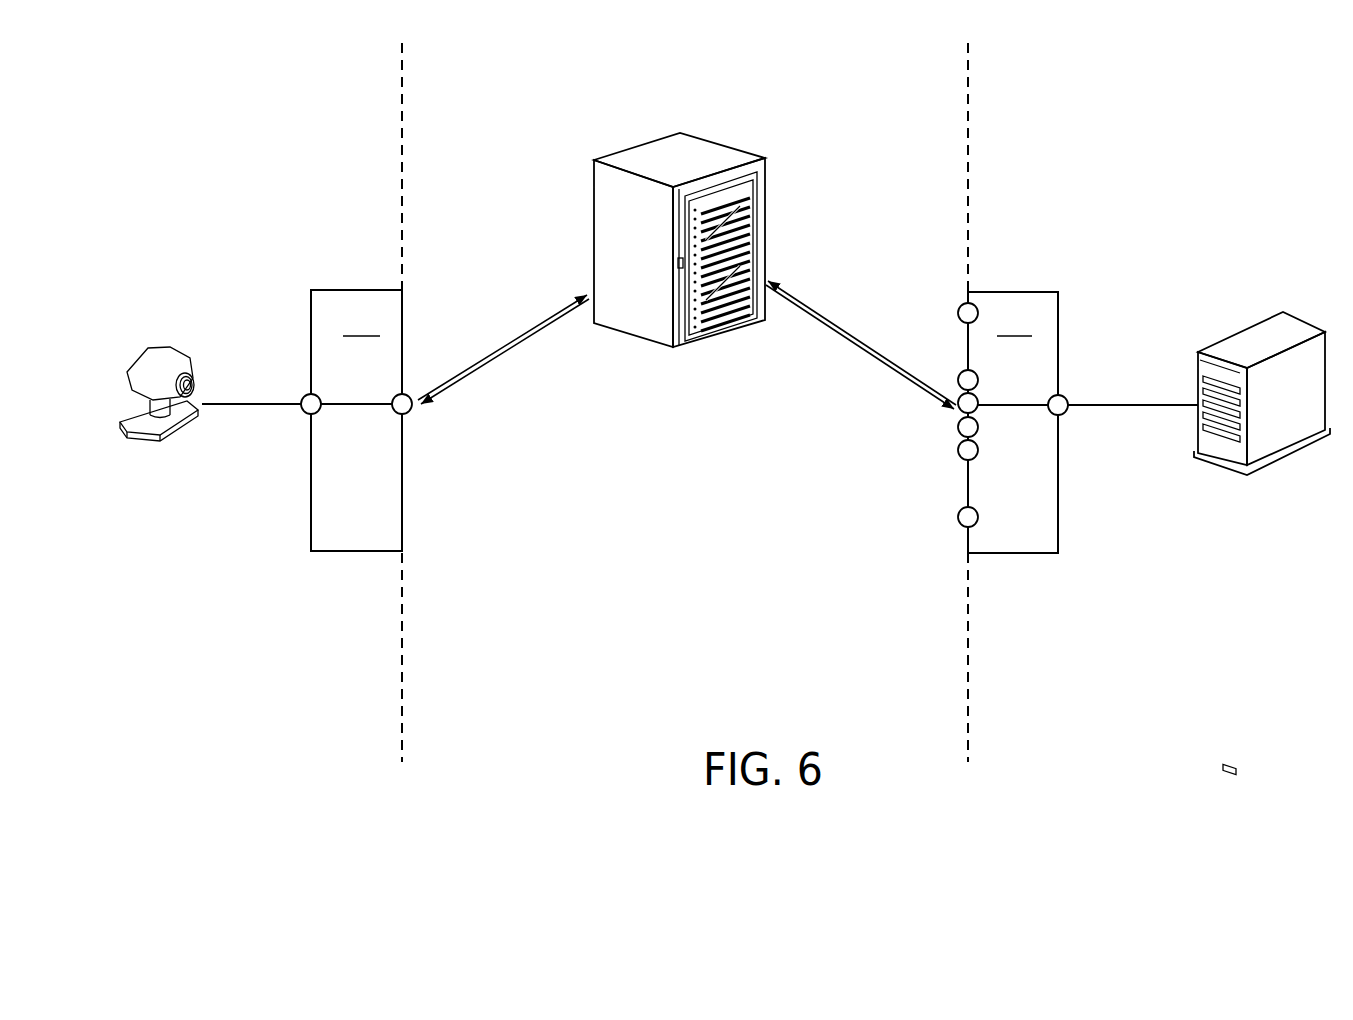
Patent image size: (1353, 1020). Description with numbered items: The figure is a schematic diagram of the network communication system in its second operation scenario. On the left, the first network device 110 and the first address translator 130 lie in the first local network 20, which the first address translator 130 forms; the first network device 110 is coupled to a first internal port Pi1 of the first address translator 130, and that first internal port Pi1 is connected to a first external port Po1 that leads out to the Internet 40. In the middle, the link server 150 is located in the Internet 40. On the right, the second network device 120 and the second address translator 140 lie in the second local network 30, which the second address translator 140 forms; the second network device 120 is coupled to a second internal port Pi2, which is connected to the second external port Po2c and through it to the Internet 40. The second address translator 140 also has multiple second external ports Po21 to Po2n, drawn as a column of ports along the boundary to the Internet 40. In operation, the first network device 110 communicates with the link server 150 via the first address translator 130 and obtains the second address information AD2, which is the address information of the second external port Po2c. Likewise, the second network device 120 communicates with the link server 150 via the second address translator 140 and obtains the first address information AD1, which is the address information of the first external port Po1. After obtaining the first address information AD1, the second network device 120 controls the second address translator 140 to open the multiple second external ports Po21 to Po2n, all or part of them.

The first local network 20 is at (363, 73).
The second local network 30 is at (1300, 73).
The Internet 40 is at (770, 73).
The first network device 110 is at (132, 441).
The second network device 120 is at (1240, 472).
The first address translator 130 is at (340, 551).
The second address translator 140 is at (1045, 553).
The link server 150 is at (724, 142).
The first internal port Pi1 is at (303, 394).
The first external port Po1 is at (411, 413).
The second internal port Pi2 is at (1064, 395).
The second external port Po21 is at (960, 305).
The second external port Po2c is at (957, 415).
The second external port Po2n is at (960, 526).
The first address information AD1 is at (861, 345).
The second address information AD2 is at (503, 349).